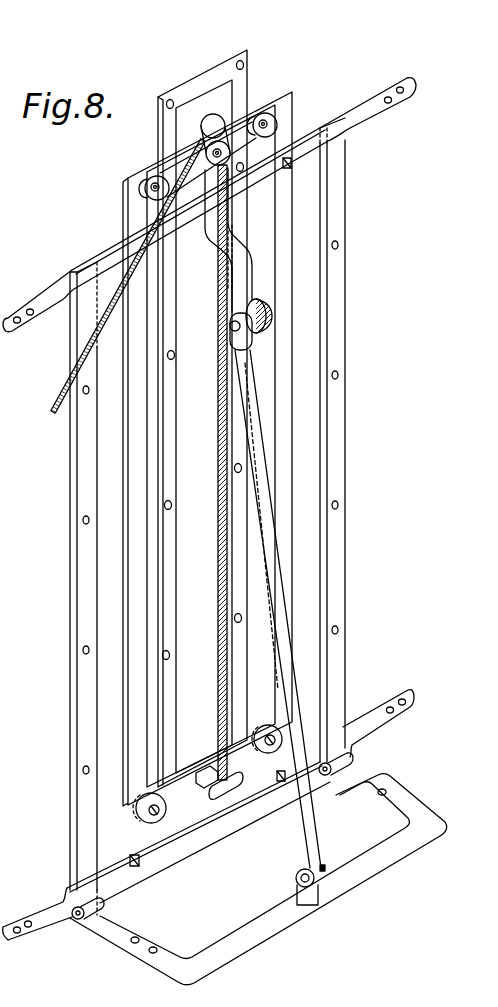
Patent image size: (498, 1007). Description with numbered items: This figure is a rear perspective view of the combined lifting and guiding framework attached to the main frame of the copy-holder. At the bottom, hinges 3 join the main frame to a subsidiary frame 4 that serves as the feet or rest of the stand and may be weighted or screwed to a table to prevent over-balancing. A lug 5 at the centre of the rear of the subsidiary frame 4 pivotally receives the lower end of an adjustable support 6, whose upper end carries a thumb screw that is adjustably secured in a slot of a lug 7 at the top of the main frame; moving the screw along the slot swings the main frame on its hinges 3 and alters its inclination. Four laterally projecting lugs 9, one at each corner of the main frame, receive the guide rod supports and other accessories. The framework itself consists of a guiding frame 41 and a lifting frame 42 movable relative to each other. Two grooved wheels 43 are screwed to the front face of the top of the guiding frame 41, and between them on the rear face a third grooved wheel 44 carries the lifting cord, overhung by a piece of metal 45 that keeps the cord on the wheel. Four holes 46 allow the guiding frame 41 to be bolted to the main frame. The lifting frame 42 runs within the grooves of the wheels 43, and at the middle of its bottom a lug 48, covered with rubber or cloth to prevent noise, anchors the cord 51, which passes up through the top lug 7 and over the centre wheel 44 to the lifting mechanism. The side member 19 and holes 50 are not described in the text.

The hinges 3 is at (355, 758).
The subsidiary frame 4 is at (278, 915).
The lug 5 is at (297, 875).
The adjustable support 6 is at (280, 636).
The lug 7 is at (238, 273).
The laterally projecting lugs 9 is at (370, 108).
The side post 19 is at (89, 390).
The guiding frame 41 is at (283, 127).
The lifting frame 42 is at (202, 405).
The grooved wheels 43 is at (147, 173).
The third grooved wheel 44 is at (210, 128).
The piece of metal 45 is at (236, 102).
The holes 46 is at (283, 162).
The lug 48 is at (210, 772).
The holes 50 is at (176, 356).
The cord 51 is at (53, 423).